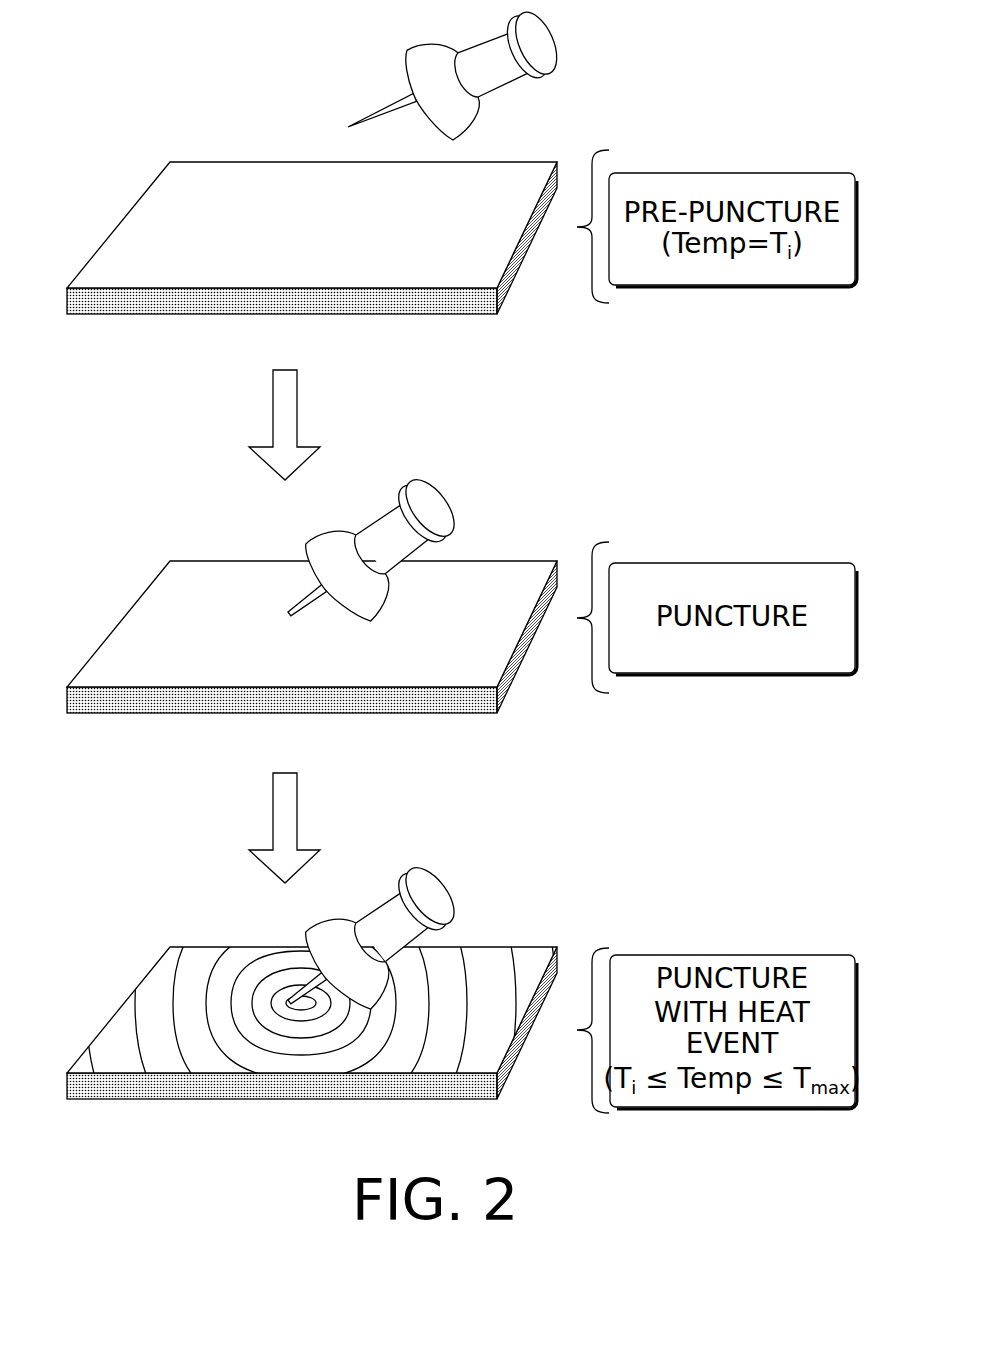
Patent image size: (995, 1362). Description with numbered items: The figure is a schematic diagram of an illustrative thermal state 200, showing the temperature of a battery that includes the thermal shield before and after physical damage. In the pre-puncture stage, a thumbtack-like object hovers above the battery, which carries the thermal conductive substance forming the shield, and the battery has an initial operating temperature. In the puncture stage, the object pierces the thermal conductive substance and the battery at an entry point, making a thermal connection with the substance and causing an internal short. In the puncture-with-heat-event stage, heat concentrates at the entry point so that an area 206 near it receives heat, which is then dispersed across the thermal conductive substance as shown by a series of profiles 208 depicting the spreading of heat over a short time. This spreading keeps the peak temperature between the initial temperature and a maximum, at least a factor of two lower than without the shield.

The thermal state 200 is at (770, 107).
The area 206 is at (306, 1010).
The profiles 208 is at (198, 916).